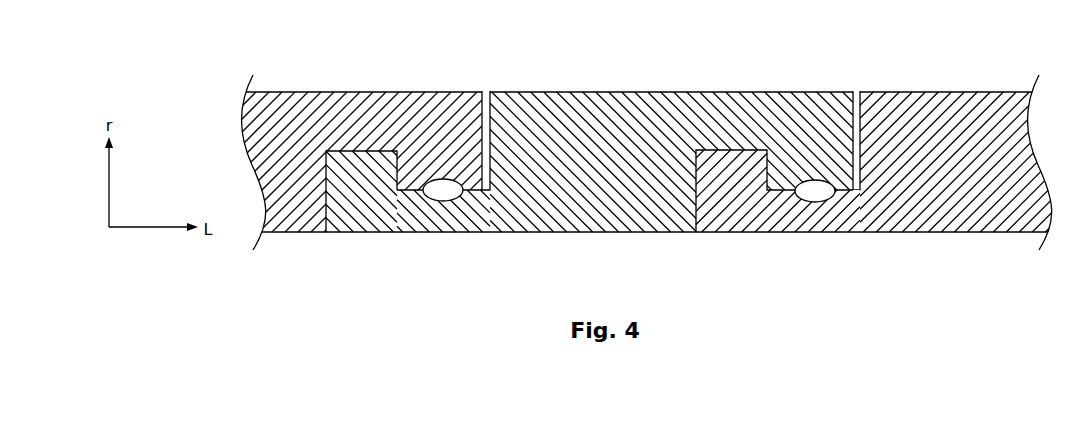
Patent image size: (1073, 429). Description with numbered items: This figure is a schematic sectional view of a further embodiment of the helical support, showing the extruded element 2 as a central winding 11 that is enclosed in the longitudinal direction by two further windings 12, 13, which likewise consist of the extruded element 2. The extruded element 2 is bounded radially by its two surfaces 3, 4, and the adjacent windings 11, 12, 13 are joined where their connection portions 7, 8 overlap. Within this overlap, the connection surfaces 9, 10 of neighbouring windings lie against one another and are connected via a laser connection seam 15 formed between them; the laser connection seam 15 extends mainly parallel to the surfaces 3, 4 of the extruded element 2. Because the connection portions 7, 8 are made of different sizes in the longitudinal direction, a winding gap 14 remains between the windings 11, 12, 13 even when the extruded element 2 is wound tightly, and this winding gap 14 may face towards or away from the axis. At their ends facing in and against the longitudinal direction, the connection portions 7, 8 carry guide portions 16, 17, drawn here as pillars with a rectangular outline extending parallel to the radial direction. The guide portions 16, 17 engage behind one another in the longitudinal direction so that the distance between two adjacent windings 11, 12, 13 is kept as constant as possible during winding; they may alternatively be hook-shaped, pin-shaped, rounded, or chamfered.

The extruded element 2 is at (610, 277).
The surface 3 is at (588, 92).
The surface 4 is at (603, 233).
The connection portion 7 is at (325, 85).
The connection portion 8 is at (695, 238).
The connection surface 9 is at (420, 192).
The connection surface 10 is at (770, 187).
The winding 11 is at (641, 29).
The further winding 12 is at (330, 28).
The further winding 13 is at (936, 29).
The winding gap 14 is at (492, 80).
The laser connection seam 15 is at (815, 179).
The guide portion 16 is at (372, 190).
The guide portion 17 is at (461, 143).